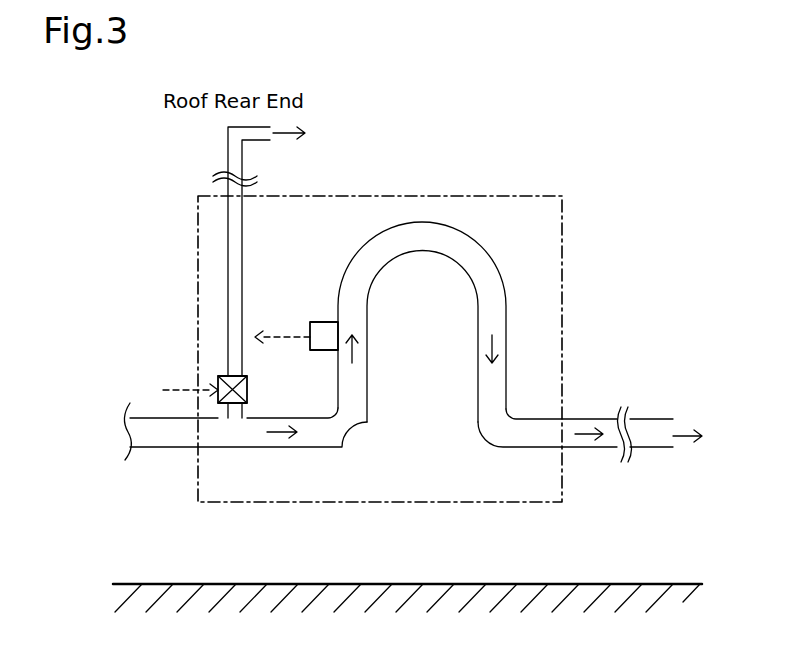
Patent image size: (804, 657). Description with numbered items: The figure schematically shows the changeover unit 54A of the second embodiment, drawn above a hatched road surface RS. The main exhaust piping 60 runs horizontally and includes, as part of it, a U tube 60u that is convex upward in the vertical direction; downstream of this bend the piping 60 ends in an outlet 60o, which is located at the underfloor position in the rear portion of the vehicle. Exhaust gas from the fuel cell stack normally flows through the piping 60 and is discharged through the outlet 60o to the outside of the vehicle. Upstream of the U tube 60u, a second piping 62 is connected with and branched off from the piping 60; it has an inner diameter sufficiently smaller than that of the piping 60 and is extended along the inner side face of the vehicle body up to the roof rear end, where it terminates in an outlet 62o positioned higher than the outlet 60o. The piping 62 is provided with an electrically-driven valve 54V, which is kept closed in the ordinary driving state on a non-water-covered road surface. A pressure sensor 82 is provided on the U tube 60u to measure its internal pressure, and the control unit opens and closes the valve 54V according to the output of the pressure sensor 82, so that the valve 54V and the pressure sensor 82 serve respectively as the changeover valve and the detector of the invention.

The changeover unit 54A is at (198, 250).
The electrically-driven valve 54V is at (250, 388).
The piping 60 is at (413, 368).
The U tube 60u is at (477, 390).
The outlet 60o is at (661, 419).
The piping 62 is at (279, 272).
The outlet 62o is at (270, 143).
The pressure sensor 82 is at (326, 322).
The road surface RS is at (424, 584).